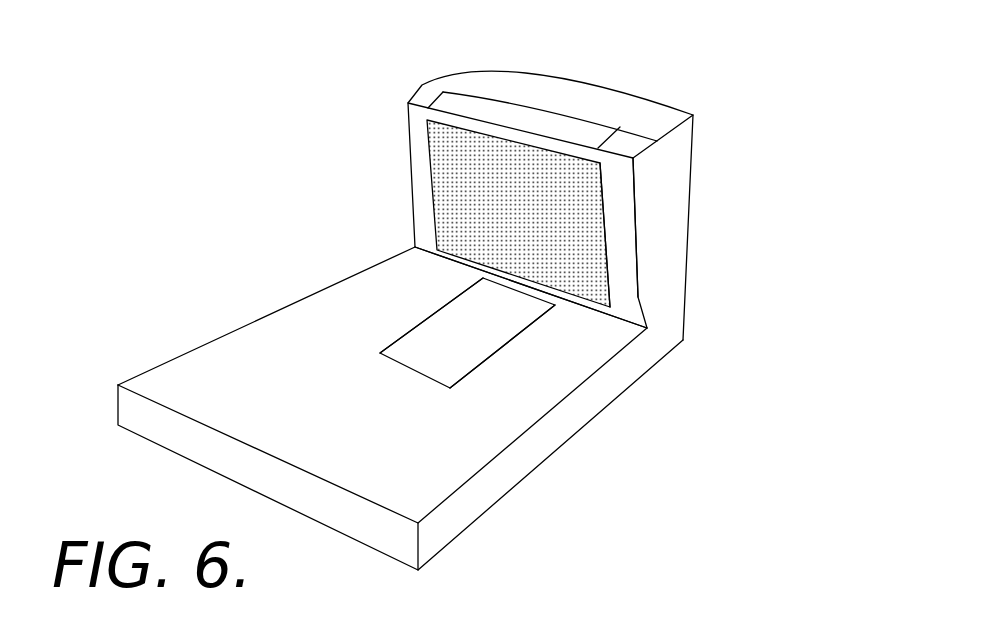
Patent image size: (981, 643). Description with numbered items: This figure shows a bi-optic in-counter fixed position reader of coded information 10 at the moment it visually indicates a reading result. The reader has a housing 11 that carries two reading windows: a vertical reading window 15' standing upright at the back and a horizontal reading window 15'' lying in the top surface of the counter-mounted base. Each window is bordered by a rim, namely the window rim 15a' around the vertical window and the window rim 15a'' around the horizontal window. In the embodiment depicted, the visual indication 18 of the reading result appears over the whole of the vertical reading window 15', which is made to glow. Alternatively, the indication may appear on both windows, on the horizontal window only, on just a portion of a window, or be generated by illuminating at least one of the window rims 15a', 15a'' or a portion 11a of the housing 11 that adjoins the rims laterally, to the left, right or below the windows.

The fixed position reader of coded information 10 is at (687, 49).
The housing 11 is at (239, 347).
The portion of the housing 11a is at (420, 290).
The vertical reading window 15' is at (596, 205).
The window rim of the vertical reading window 15a' is at (692, 232).
The horizontal reading window 15'' is at (530, 402).
The window rim of the horizontal reading window 15a'' is at (526, 415).
The visual indication of the reading result 18 is at (531, 218).